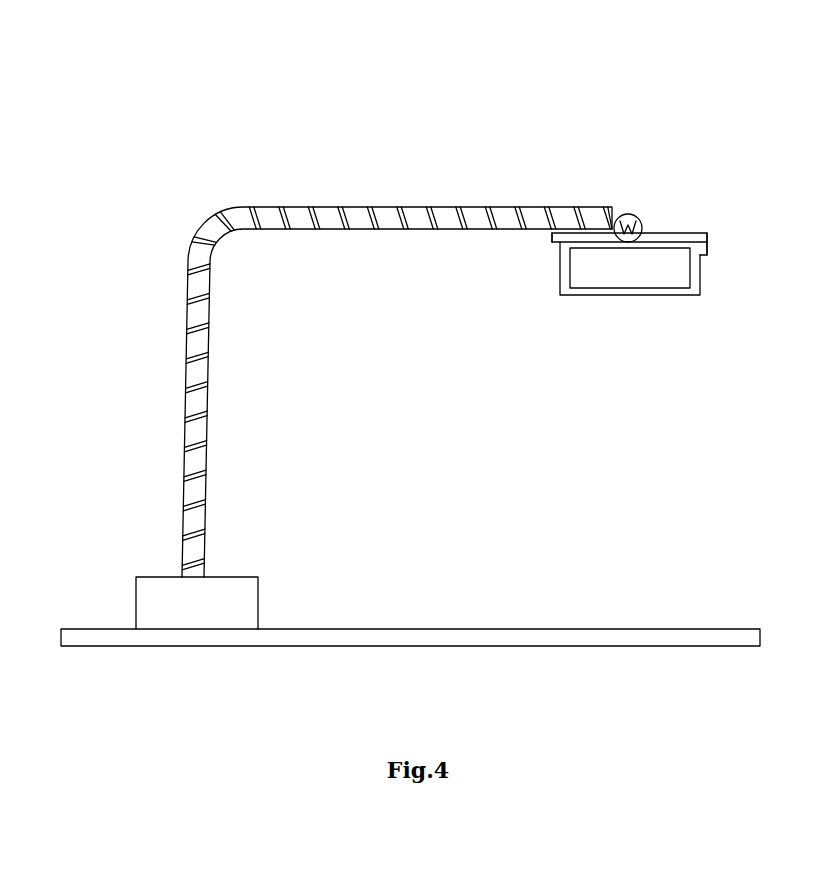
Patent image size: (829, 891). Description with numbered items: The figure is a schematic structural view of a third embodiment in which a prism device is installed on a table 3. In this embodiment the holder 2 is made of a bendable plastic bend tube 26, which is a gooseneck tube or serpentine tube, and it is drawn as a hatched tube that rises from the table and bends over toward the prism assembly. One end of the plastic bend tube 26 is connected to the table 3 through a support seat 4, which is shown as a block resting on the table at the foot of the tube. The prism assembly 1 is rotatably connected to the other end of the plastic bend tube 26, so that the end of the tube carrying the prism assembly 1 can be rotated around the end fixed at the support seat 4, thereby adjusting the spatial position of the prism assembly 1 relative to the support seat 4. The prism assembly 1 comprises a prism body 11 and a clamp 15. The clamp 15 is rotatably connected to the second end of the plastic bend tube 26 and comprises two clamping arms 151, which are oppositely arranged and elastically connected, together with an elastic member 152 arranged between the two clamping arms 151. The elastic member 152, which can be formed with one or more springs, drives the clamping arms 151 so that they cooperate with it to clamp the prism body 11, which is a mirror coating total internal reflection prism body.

The prism assembly 1 is at (587, 317).
The prism body 11 is at (575, 268).
The clamp 15 is at (628, 155).
The clamping arm 151 is at (567, 233).
The elastic member 152 is at (627, 214).
The holder 2 is at (397, 299).
The plastic bend tube 26 is at (202, 307).
The table 3 is at (508, 632).
The support seat 4 is at (247, 600).